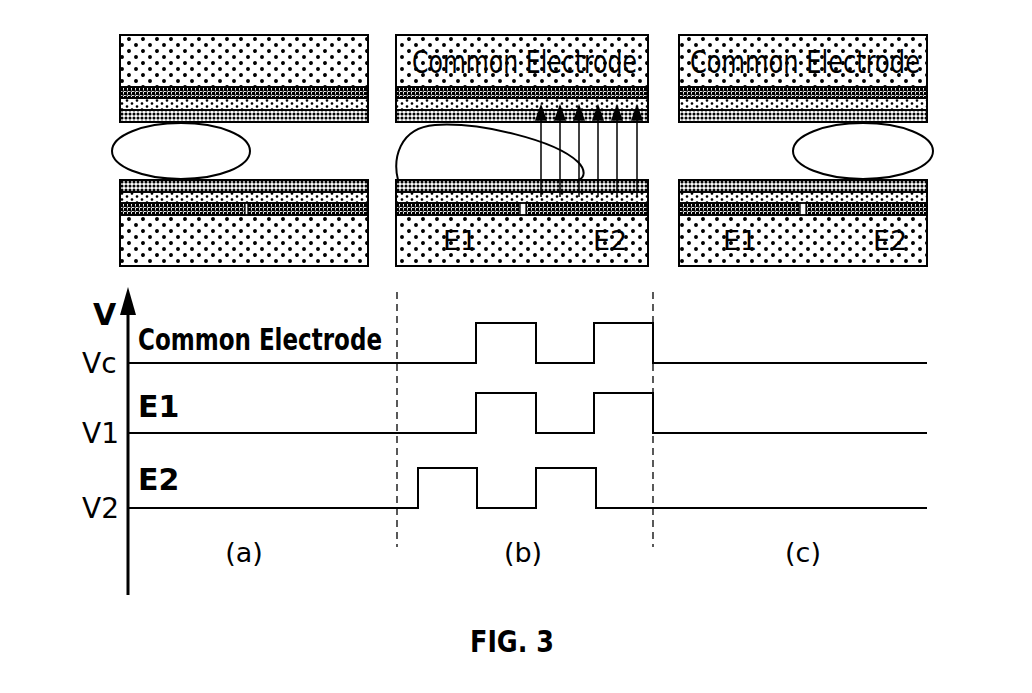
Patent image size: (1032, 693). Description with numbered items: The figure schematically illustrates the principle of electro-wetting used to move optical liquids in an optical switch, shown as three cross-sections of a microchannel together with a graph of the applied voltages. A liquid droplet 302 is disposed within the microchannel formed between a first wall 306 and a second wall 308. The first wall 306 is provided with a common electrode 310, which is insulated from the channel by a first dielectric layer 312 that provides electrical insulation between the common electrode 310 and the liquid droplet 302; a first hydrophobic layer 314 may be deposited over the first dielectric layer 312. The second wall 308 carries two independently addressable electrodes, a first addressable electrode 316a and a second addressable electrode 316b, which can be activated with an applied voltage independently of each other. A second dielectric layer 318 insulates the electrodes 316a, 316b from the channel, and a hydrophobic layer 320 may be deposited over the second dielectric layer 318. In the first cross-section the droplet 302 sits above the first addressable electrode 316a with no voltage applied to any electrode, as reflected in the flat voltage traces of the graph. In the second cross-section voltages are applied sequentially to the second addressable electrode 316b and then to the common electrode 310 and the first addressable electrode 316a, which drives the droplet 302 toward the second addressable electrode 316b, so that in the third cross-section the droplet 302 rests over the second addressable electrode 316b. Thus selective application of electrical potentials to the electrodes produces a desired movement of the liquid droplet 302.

The liquid droplet 302 is at (112, 149).
The first wall 306 is at (120, 48).
The second wall 308 is at (120, 253).
The common electrode 310 is at (120, 92).
The first dielectric layer 312 is at (120, 105).
The first hydrophobic layer 314 is at (120, 117).
The first addressable electrode 316a is at (120, 209).
The second addressable electrode 316b is at (303, 212).
The second dielectric layer 318 is at (120, 198).
The hydrophobic layer 320 is at (120, 186).